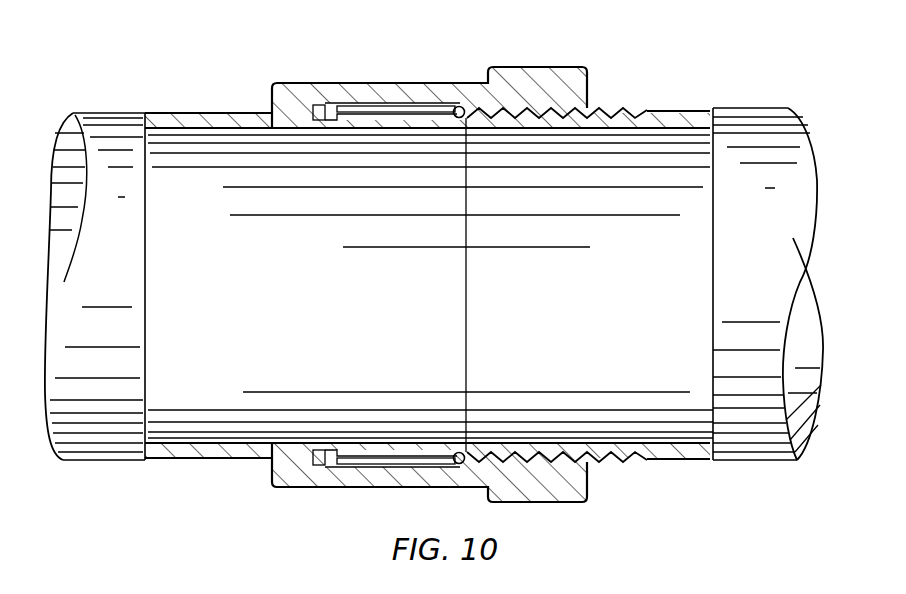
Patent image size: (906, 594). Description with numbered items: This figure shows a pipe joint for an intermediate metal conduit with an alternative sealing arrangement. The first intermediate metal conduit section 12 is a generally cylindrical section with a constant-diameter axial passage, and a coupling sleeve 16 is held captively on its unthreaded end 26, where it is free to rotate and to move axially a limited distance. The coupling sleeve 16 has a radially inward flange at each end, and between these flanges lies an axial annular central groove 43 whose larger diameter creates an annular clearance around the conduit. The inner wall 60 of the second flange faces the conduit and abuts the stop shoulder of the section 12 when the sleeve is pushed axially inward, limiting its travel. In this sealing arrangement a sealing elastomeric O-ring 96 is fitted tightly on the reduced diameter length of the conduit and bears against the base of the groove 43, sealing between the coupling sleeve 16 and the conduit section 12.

The first intermediate metal conduit section 12 is at (197, 114).
The coupling sleeve 16 is at (550, 66).
The end of the first section 26 is at (378, 443).
The axial annular central groove 43 is at (393, 108).
The inner wall of the second flange 60 is at (588, 89).
The sealing elastomeric O-ring 96 is at (457, 105).